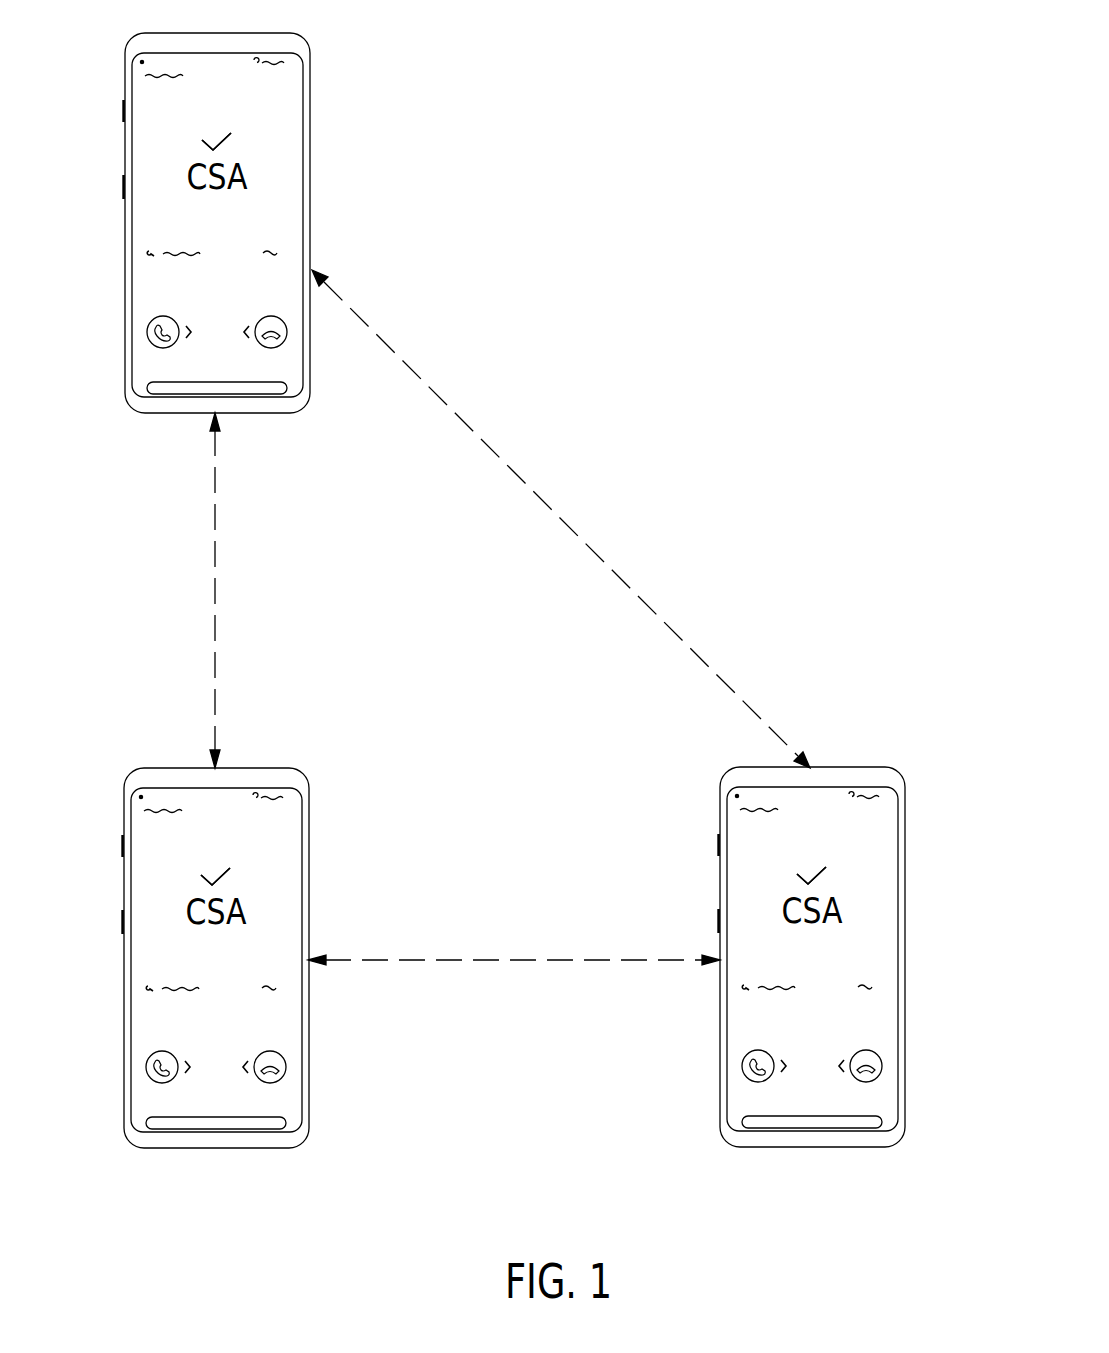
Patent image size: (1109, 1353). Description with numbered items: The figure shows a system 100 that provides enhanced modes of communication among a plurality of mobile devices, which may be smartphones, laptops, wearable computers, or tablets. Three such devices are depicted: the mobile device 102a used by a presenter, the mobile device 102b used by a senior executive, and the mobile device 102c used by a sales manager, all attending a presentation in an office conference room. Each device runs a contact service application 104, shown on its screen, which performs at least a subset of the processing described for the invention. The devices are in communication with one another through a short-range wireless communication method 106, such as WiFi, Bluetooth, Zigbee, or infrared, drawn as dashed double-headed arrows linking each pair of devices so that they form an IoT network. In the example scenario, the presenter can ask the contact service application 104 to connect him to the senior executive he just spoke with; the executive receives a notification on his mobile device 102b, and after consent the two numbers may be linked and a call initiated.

The system 100 is at (786, 123).
The mobile device 102a is at (311, 113).
The mobile device 102b is at (310, 848).
The mobile device 102c is at (898, 850).
The contact service application 104 is at (180, 172).
The short-range wireless communication method 106 is at (233, 588).